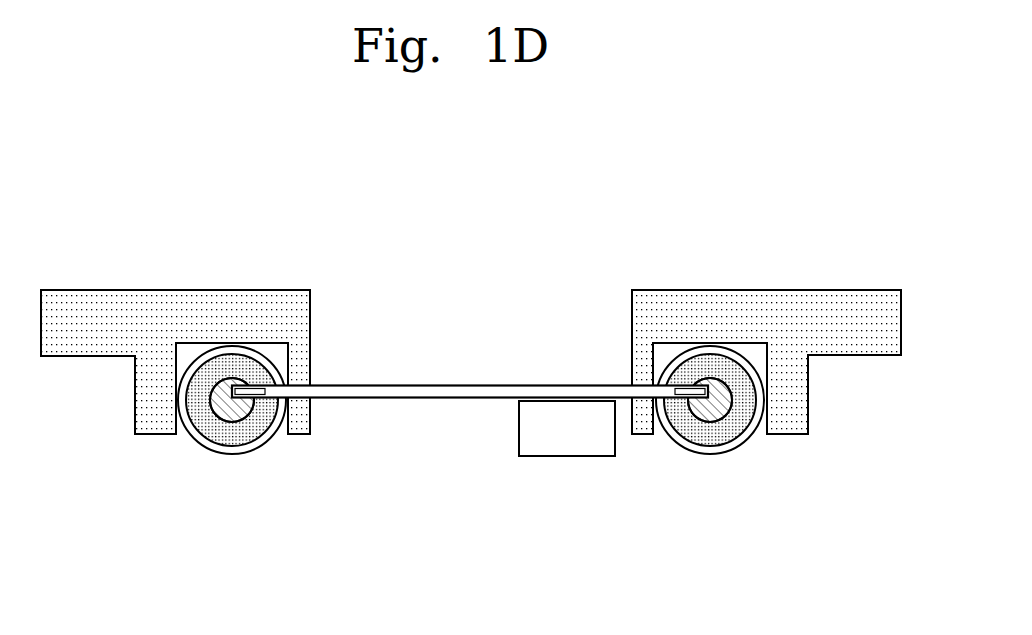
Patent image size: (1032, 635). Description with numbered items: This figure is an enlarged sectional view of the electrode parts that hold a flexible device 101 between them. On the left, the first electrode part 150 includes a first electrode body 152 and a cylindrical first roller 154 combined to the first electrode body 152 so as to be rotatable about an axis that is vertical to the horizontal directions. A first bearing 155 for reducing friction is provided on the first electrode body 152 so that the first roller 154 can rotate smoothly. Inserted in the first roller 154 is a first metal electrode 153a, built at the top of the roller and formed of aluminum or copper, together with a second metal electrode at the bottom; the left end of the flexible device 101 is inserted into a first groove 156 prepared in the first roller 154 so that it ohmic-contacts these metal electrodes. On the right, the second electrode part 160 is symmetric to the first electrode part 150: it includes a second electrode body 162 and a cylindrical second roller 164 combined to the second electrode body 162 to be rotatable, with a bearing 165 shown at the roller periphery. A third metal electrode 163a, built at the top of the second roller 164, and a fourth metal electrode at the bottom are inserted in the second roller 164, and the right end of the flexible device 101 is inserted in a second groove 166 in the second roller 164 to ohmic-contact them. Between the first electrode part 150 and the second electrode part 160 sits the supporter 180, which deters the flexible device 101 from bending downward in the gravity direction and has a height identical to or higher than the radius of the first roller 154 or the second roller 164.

The flexible device 101 is at (470, 370).
The first electrode part 150 is at (176, 356).
The first electrode body 152 is at (219, 298).
The first metal electrode 153a is at (220, 402).
The first roller 154 is at (228, 440).
The first bearing 155 is at (264, 446).
The first groove 156 is at (257, 383).
The second electrode part 160 is at (766, 356).
The second electrode body 162 is at (743, 295).
The third metal electrode 163a is at (726, 402).
The second roller 164 is at (712, 440).
The second outer ring 165 is at (678, 446).
The second groove 166 is at (685, 383).
The supporter 180 is at (568, 438).